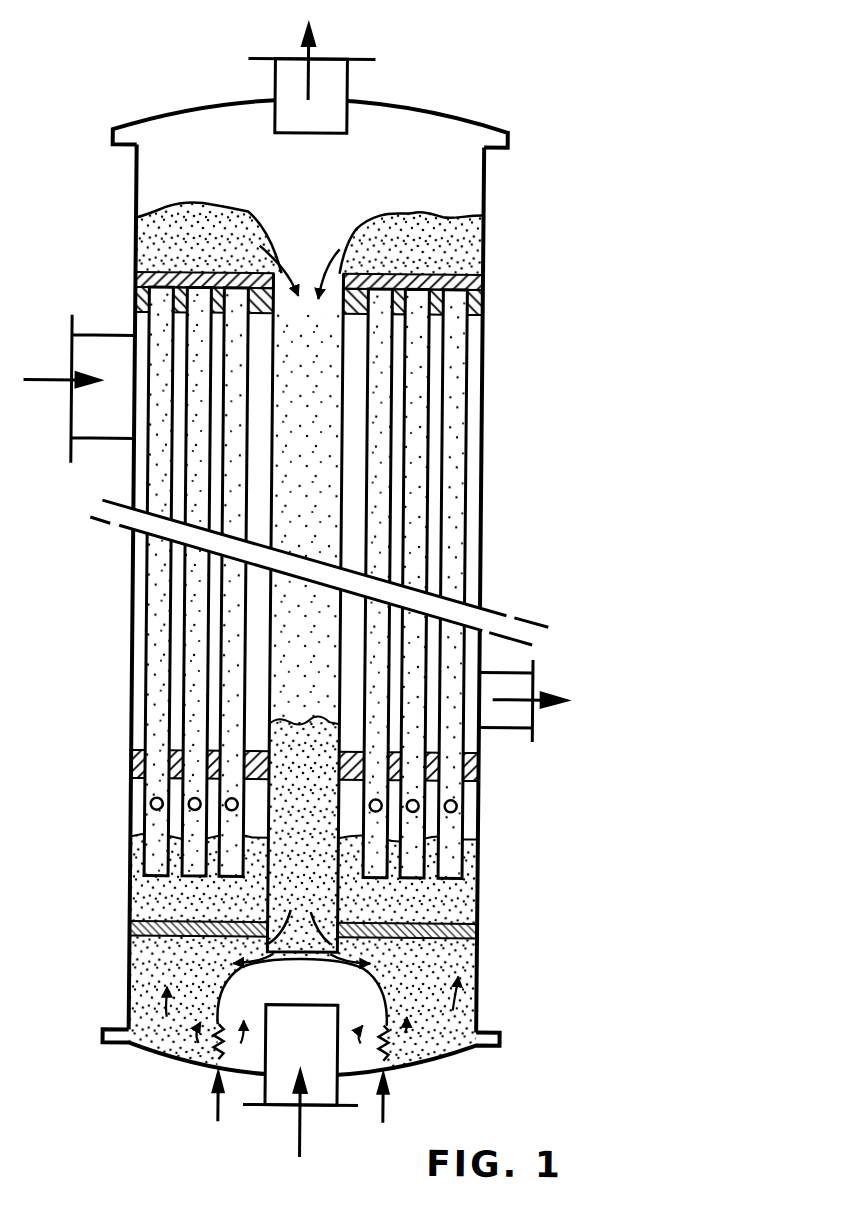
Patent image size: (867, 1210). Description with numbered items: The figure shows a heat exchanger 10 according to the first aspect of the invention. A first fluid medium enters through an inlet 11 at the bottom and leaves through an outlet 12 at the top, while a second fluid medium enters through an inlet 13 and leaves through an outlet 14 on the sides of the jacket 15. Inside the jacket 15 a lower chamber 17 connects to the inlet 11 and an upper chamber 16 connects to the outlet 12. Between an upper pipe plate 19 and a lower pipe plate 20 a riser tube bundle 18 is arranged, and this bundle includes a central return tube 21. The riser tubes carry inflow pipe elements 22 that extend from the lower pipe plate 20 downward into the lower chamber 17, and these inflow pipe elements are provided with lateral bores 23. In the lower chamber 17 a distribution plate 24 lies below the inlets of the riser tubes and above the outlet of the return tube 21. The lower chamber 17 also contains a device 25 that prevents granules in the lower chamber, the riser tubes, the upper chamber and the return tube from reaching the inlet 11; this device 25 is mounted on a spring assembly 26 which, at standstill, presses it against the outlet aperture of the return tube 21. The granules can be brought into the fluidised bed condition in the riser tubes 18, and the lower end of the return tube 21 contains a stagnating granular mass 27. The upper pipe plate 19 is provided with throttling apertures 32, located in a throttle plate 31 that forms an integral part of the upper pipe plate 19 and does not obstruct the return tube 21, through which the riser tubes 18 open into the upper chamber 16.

The heat exchanger 10 is at (305, 585).
The inlet 11 is at (333, 1087).
The outlet 12 is at (326, 62).
The inlet 13 is at (89, 419).
The outlet 14 is at (534, 685).
The jacket 15 is at (489, 418).
The upper chamber 16 is at (467, 179).
The lower chamber 17 is at (446, 1025).
The riser tube bundle 18 is at (424, 489).
The upper pipe plate 19 is at (490, 300).
The lower pipe plate 20 is at (482, 761).
The return tube 21 is at (335, 545).
The inflow pipe elements 22 is at (422, 849).
The lateral bores 23 is at (196, 807).
The distribution plate 24 is at (486, 926).
The device 25 is at (240, 980).
The spring assembly 26 is at (210, 1054).
The stagnating granular mass 27 is at (338, 887).
The throttle plate 31 is at (484, 277).
The throttling apertures 32 is at (422, 262).